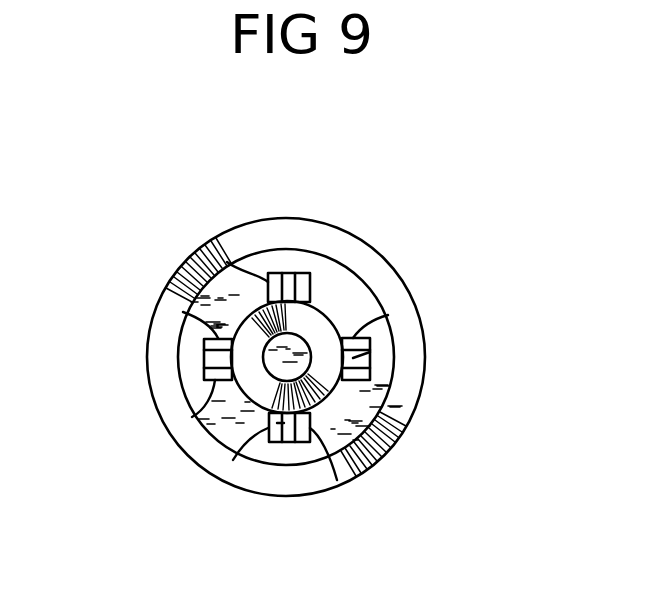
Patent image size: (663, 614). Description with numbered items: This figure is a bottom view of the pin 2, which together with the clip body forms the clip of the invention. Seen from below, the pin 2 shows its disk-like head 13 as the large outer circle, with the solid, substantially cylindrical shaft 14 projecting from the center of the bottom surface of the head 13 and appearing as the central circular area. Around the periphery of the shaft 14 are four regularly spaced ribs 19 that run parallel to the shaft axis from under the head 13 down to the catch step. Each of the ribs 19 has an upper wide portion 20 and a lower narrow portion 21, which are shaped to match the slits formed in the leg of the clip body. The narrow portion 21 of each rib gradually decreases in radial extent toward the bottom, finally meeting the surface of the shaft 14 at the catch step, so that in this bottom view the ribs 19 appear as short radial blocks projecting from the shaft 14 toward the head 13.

The pin 2 is at (447, 251).
The head 13 is at (373, 253).
The shaft 14 is at (320, 385).
The ribs 19 is at (287, 273).
The upper wide portions 20 is at (227, 262).
The lower narrow portions 21 is at (297, 290).